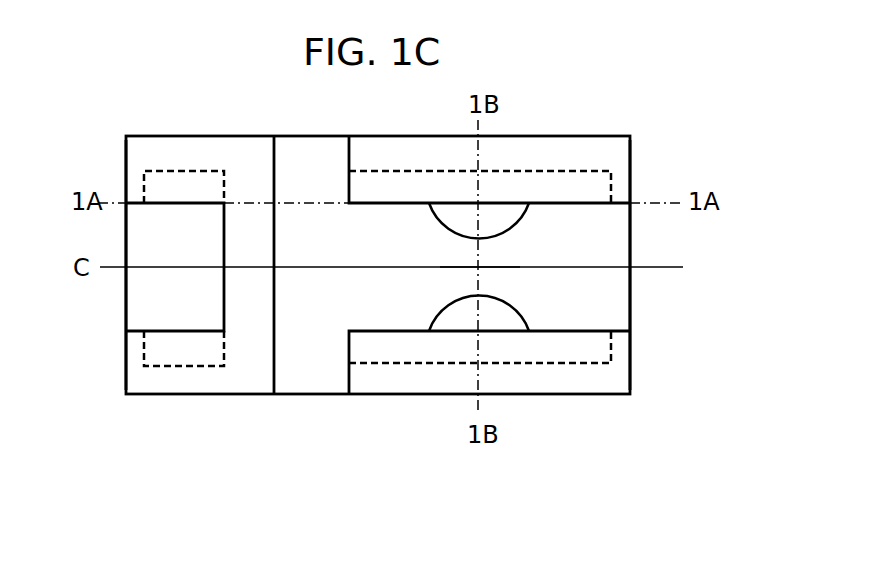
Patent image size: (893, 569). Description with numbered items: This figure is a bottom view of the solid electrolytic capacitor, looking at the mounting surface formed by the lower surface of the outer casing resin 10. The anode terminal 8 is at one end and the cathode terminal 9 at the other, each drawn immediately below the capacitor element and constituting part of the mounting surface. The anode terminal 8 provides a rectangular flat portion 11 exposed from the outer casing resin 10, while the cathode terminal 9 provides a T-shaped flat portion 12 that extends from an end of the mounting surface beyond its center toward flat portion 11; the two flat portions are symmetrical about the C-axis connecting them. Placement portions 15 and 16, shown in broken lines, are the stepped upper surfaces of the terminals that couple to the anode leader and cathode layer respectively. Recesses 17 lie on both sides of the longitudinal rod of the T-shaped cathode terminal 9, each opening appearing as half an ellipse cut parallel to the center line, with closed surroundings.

The anode terminal 8 is at (126, 306).
The cathode terminal 9 is at (636, 310).
The outer casing resin 10 is at (243, 163).
The flat portion 11 is at (184, 273).
The flat portion 12 is at (489, 257).
The placement portion 15 is at (187, 191).
The placement portion 16 is at (565, 190).
The recess 17 is at (451, 217).